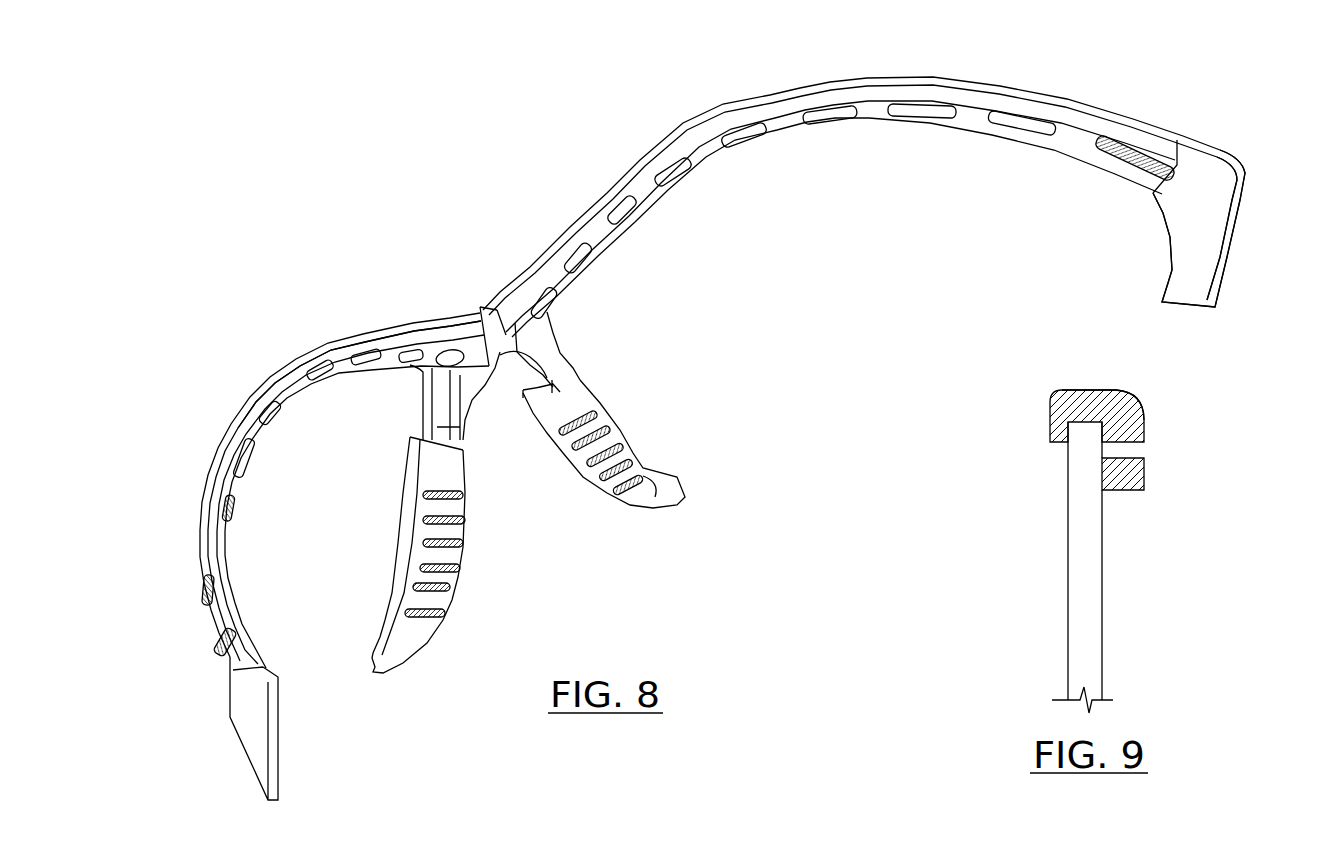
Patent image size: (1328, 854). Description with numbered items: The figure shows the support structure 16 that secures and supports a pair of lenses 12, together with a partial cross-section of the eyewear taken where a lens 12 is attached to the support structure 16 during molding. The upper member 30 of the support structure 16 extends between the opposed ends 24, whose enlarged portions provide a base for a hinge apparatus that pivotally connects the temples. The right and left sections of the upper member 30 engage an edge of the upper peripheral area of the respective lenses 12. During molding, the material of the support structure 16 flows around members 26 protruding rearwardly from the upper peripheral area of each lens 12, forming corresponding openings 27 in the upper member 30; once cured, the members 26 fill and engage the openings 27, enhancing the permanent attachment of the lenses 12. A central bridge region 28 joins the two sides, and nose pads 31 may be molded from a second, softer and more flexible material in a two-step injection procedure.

In FIG. 8, the support structure 16 is at (640, 160).
In FIG. 9, the support structure 16 is at (1094, 390).
In FIG. 8, the upper member 30 is at (360, 340).
In FIG. 9, the upper member 30 is at (1144, 402).
In FIG. 8, the openings 27 is at (810, 127).
In FIG. 8, the nose bridge 28 is at (560, 353).
In FIG. 8, the nose pads 31 is at (628, 445).
In FIG. 8, the opposed ends 24 is at (1240, 200).
In FIG. 9, the members 26 is at (1138, 450).
In FIG. 9, the lenses 12 is at (1103, 593).